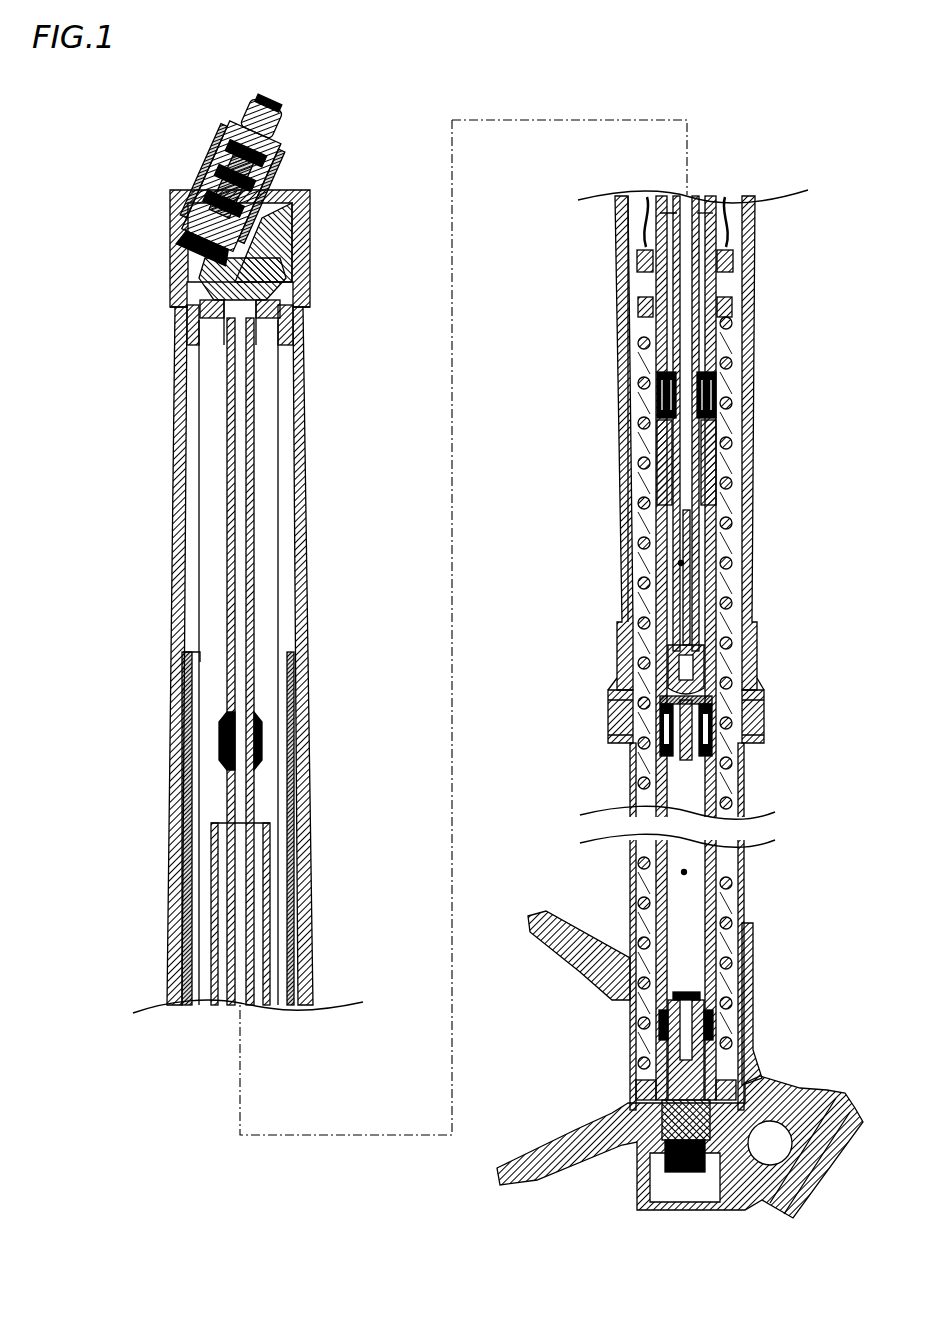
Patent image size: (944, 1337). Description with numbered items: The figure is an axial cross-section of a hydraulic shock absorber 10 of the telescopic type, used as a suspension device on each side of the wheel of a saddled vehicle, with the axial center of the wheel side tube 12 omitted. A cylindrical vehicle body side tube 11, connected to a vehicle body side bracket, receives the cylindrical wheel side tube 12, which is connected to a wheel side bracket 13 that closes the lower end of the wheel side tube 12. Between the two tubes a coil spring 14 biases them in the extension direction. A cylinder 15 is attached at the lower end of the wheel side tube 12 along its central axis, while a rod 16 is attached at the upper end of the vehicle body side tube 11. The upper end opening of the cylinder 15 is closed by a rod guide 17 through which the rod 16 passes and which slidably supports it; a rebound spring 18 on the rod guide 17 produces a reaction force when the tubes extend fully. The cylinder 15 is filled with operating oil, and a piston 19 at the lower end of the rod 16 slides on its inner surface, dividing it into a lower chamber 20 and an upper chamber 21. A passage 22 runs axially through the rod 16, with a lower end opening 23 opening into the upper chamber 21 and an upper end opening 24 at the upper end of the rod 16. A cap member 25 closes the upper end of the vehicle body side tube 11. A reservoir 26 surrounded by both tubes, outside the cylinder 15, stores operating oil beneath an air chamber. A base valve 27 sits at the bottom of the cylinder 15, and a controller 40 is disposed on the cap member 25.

The hydraulic shock absorber 10 is at (374, 151).
The vehicle body side tube 11 is at (310, 600).
The wheel side tube 12 is at (746, 770).
The wheel side bracket 13 is at (783, 1100).
The coil spring 14 is at (744, 900).
The cylinder 15 is at (746, 542).
The rod 16 is at (229, 470).
The rod guide 17 is at (636, 366).
The rebound spring 18 is at (745, 456).
The piston 19 is at (627, 748).
The lower chamber 20 is at (640, 868).
The upper chamber 21 is at (629, 562).
The passage 22 is at (242, 572).
The lower end opening 23 is at (765, 712).
The upper end opening 24 is at (262, 274).
The cap member 25 is at (306, 205).
The reservoir 26 is at (296, 420).
The base valve 27 is at (633, 1030).
The controller 40 is at (186, 156).